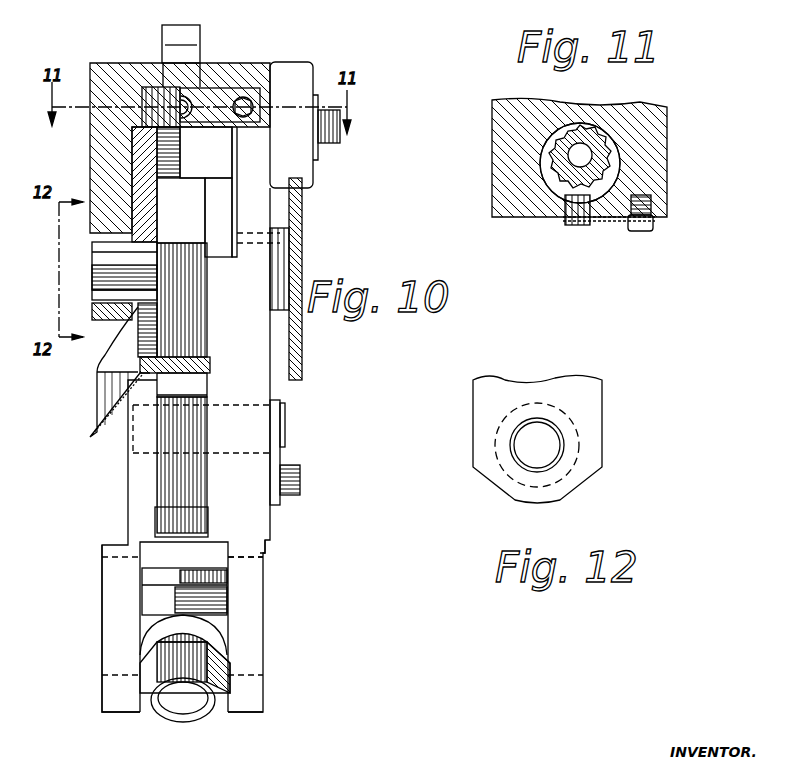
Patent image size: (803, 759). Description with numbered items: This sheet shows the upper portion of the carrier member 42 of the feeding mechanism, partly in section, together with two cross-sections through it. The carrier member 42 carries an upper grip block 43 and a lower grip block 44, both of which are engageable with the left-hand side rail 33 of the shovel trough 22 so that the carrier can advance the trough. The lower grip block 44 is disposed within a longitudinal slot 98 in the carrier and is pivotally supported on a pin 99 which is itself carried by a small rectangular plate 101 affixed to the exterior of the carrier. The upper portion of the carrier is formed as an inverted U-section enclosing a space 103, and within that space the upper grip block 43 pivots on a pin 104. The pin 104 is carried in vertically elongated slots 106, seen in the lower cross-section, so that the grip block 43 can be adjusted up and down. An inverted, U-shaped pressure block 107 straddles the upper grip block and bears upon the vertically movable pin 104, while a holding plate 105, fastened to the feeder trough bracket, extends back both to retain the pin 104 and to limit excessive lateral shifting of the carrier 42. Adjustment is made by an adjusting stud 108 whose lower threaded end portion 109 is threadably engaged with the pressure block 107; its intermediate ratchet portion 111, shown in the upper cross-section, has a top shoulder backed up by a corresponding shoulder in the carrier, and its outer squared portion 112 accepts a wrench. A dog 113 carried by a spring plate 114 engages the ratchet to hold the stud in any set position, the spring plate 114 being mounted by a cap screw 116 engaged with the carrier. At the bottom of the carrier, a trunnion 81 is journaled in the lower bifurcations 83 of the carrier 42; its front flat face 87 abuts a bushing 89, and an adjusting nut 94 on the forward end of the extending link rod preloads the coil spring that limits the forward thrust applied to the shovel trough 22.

In FIG. 10, the shovel trough 22 is at (100, 393).
In FIG. 10, the side rail 33 is at (208, 360).
In FIG. 10, the carrier member 42 is at (92, 66).
In FIG. 11, the carrier member 42 is at (665, 118).
In FIG. 12, the carrier member 42 is at (590, 398).
In FIG. 10, the upper grip block 43 is at (188, 218).
In FIG. 10, the lower grip block 44 is at (200, 388).
In FIG. 10, the trunnion 81 is at (272, 556).
In FIG. 10, the lower bifurcations 83 is at (112, 700).
In FIG. 10, the front flat face 87 is at (225, 623).
In FIG. 10, the bushing 89 is at (225, 650).
In FIG. 10, the adjusting nut 94 is at (232, 680).
In FIG. 10, the longitudinal slot 98 is at (165, 528).
In FIG. 10, the pin 99 is at (133, 440).
In FIG. 10, the rectangular plate 101 is at (280, 420).
In FIG. 10, the space 103 is at (135, 135).
In FIG. 10, the pin 104 is at (108, 260).
In FIG. 12, the pin 104 is at (552, 460).
In FIG. 10, the holding plate 105 is at (298, 246).
In FIG. 10, the vertically elongated slots 106 is at (102, 290).
In FIG. 12, the vertically elongated slots 106 is at (535, 420).
In FIG. 10, the pressure block 107 is at (220, 171).
In FIG. 10, the adjusting stud 108 is at (203, 45).
In FIG. 10, the lower threaded end portion 109 is at (180, 152).
In FIG. 11, the lower threaded end portion 109 is at (618, 167).
In FIG. 10, the ratchet portion 111 is at (145, 92).
In FIG. 11, the ratchet portion 111 is at (607, 132).
In FIG. 10, the squared portion 112 is at (163, 40).
In FIG. 10, the dog 113 is at (190, 103).
In FIG. 11, the dog 113 is at (568, 222).
In FIG. 10, the spring plate 114 is at (225, 92).
In FIG. 11, the spring plate 114 is at (612, 220).
In FIG. 10, the cap screw 116 is at (245, 100).
In FIG. 11, the cap screw 116 is at (640, 232).